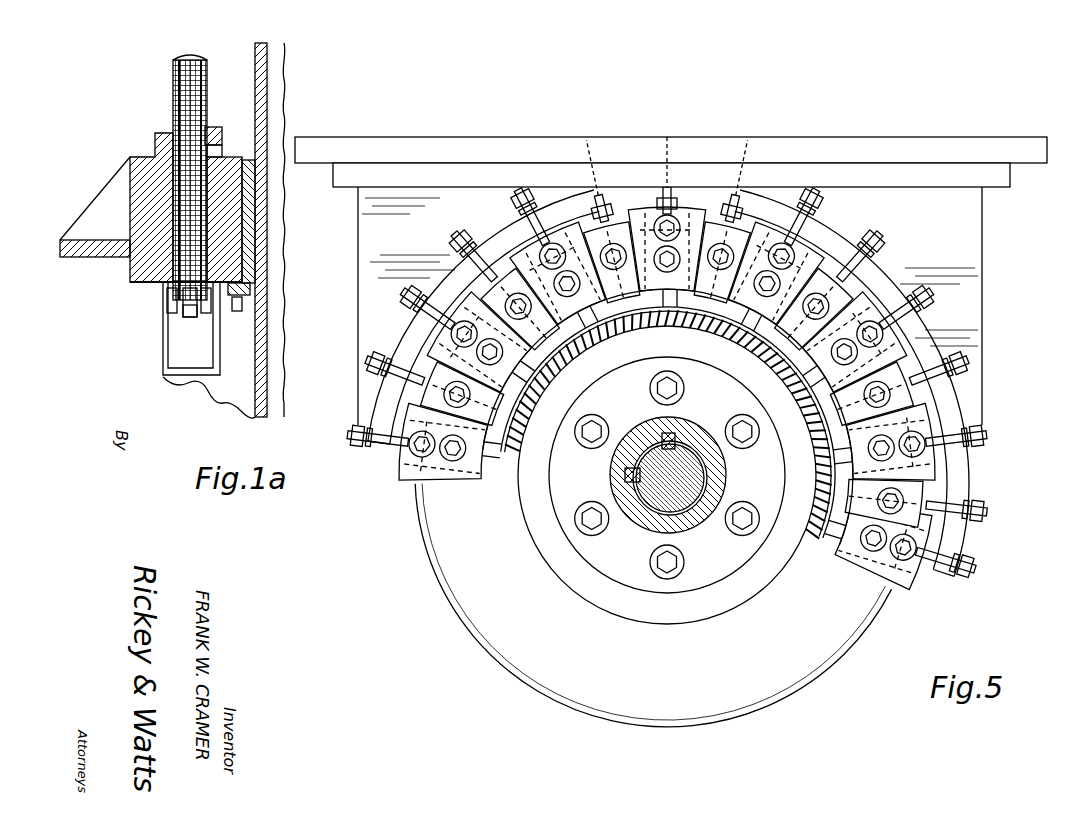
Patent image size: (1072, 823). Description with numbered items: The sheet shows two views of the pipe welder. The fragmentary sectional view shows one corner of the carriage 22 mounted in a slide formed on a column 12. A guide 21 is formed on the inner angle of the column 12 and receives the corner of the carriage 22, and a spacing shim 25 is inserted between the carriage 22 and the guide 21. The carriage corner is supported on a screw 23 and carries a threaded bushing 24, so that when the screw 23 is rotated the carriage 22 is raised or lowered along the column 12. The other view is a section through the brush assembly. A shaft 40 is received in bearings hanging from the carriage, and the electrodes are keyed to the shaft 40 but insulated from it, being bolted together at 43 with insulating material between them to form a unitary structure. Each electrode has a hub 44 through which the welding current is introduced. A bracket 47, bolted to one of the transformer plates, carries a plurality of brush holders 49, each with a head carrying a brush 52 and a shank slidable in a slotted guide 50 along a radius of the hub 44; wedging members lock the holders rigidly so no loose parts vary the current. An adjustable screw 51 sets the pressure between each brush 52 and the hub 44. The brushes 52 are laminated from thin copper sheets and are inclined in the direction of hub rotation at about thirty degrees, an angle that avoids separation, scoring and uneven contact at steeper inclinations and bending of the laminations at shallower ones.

In FIG. 1a, the column 12 is at (268, 70).
In FIG. 1a, the guide 21 is at (177, 357).
In FIG. 5, the carriage 22 is at (800, 150).
In FIG. 1a, the carriage 22 is at (143, 177).
In FIG. 1a, the screw 23 is at (177, 103).
In FIG. 1a, the threaded bushing 24 is at (150, 282).
In FIG. 1a, the spacing shim 25 is at (253, 160).
In FIG. 5, the shaft 40 is at (657, 490).
In FIG. 5, the bolt 43 is at (582, 519).
In FIG. 5, the hub 44 is at (741, 590).
In FIG. 5, the bracket 47 is at (968, 278).
In FIG. 5, the brush holder 49 is at (822, 540).
In FIG. 5, the slotted guide 50 is at (836, 530).
In FIG. 5, the adjustable screw 51 is at (976, 510).
In FIG. 5, the brush 52 is at (713, 322).